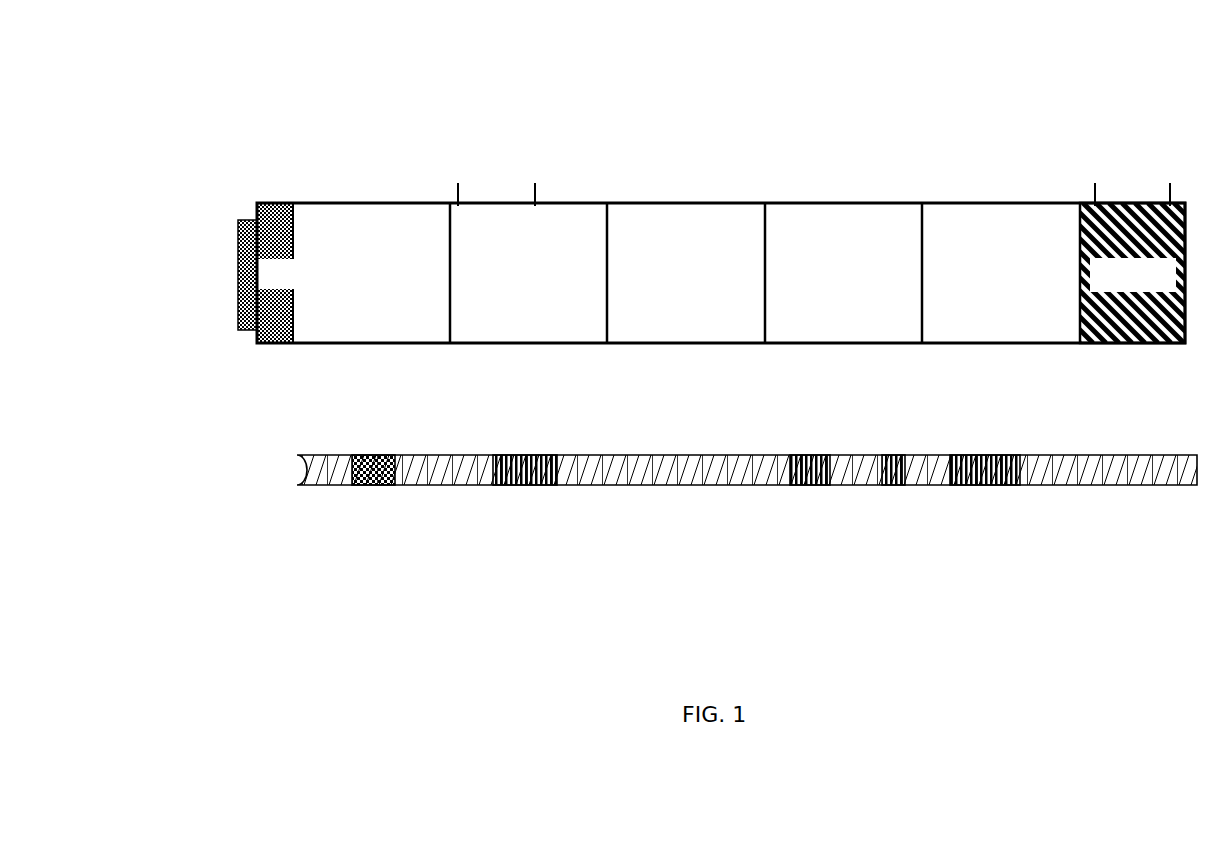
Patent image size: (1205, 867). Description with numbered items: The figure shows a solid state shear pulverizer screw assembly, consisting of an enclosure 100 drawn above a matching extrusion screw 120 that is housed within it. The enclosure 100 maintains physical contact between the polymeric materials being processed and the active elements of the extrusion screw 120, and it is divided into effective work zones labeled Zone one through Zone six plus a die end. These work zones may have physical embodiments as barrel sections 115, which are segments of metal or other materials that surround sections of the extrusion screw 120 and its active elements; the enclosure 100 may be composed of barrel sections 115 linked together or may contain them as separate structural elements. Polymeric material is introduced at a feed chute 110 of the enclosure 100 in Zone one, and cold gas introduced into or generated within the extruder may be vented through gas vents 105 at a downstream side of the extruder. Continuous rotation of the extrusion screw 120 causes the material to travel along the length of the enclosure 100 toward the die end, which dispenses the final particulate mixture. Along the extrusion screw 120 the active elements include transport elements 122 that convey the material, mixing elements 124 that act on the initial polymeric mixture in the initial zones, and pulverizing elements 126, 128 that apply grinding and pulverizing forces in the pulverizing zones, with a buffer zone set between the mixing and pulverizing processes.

The enclosure 100 is at (211, 120).
The gas vents 105 is at (495, 180).
The feed chute 110 is at (1125, 182).
The barrel sections 115 is at (951, 192).
The extrusion screw 120 is at (270, 465).
The transport elements 122 is at (1080, 492).
The mixing elements 124 is at (982, 505).
The pulverizing element 126 is at (541, 492).
The pulverizing element 128 is at (376, 502).